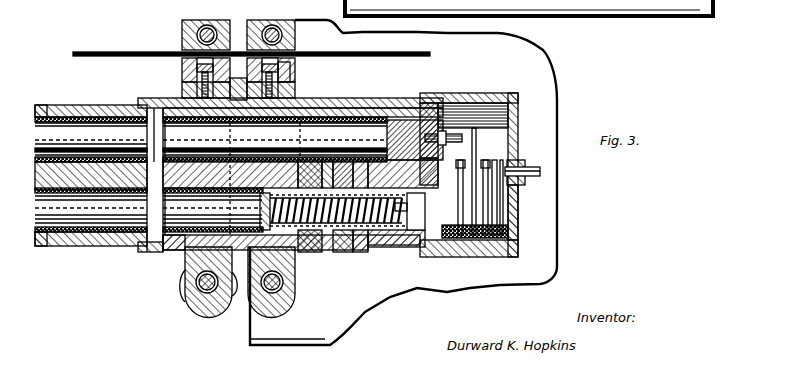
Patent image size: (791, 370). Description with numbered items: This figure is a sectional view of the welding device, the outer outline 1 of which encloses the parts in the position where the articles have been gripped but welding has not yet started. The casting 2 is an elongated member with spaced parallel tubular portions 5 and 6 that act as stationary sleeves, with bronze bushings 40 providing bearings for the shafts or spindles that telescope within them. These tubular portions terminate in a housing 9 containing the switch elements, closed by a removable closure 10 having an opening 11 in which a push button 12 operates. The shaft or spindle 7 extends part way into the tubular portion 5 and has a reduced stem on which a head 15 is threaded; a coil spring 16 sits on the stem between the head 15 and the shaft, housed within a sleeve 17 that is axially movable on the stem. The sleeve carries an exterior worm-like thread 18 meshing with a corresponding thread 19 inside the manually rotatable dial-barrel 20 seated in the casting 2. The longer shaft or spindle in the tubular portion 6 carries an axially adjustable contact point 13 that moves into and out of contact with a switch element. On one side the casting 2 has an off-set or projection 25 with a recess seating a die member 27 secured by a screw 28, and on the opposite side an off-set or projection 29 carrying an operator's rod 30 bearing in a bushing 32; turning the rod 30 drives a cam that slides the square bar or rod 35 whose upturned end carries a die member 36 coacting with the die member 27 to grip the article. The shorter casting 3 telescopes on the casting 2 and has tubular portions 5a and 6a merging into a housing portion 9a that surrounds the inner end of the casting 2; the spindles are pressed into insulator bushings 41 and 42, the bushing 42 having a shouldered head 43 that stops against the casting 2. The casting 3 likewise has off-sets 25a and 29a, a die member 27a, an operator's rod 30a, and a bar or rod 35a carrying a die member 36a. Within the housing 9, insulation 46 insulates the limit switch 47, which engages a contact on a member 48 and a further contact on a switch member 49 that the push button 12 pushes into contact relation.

The housing 1 is at (550, 85).
The casting 2 is at (350, 107).
The casting 3 is at (87, 110).
The tubular portion 5 is at (168, 120).
The tubular portion 5a is at (67, 252).
The tubular portion 6 is at (155, 255).
The tubular portion 6a is at (50, 107).
The shaft or spindle 7 is at (91, 240).
The housing 9 is at (493, 100).
The housing portion 9a is at (147, 256).
The removable closure 10 is at (523, 141).
The opening 11 is at (518, 193).
The push button 12 is at (540, 170).
The axially adjustable contact point 13 is at (458, 133).
The head 15 is at (410, 218).
The coil spring 16 is at (383, 245).
The sleeve 17 is at (342, 258).
The thread 18 is at (320, 248).
The thread 19 is at (337, 153).
The dial-barrel 20 is at (300, 150).
The off-set or projection 25 is at (295, 95).
The off-set or projection 25a is at (183, 88).
The die member 27 is at (295, 65).
The die member 27a is at (183, 70).
The screw 28 is at (295, 75).
The off-set or projection 29 is at (277, 318).
The off-set or projection 29a is at (203, 318).
The operator's rod 30 is at (253, 318).
The operator's rod 30a is at (197, 282).
The bushing 32 is at (180, 305).
The bar or rod 35 is at (283, 35).
The bar or rod 35a is at (207, 28).
The die member 36 is at (300, 45).
The die member 36a is at (182, 32).
The bronze bushings 40 is at (395, 95).
The insulator bushing 41 is at (91, 210).
The insulator bushing 42 is at (91, 139).
The shouldered head 43 is at (147, 127).
The insulation 46 is at (453, 245).
The limit switch 47 is at (517, 123).
The member 48 is at (460, 205).
The switch member 49 is at (500, 227).